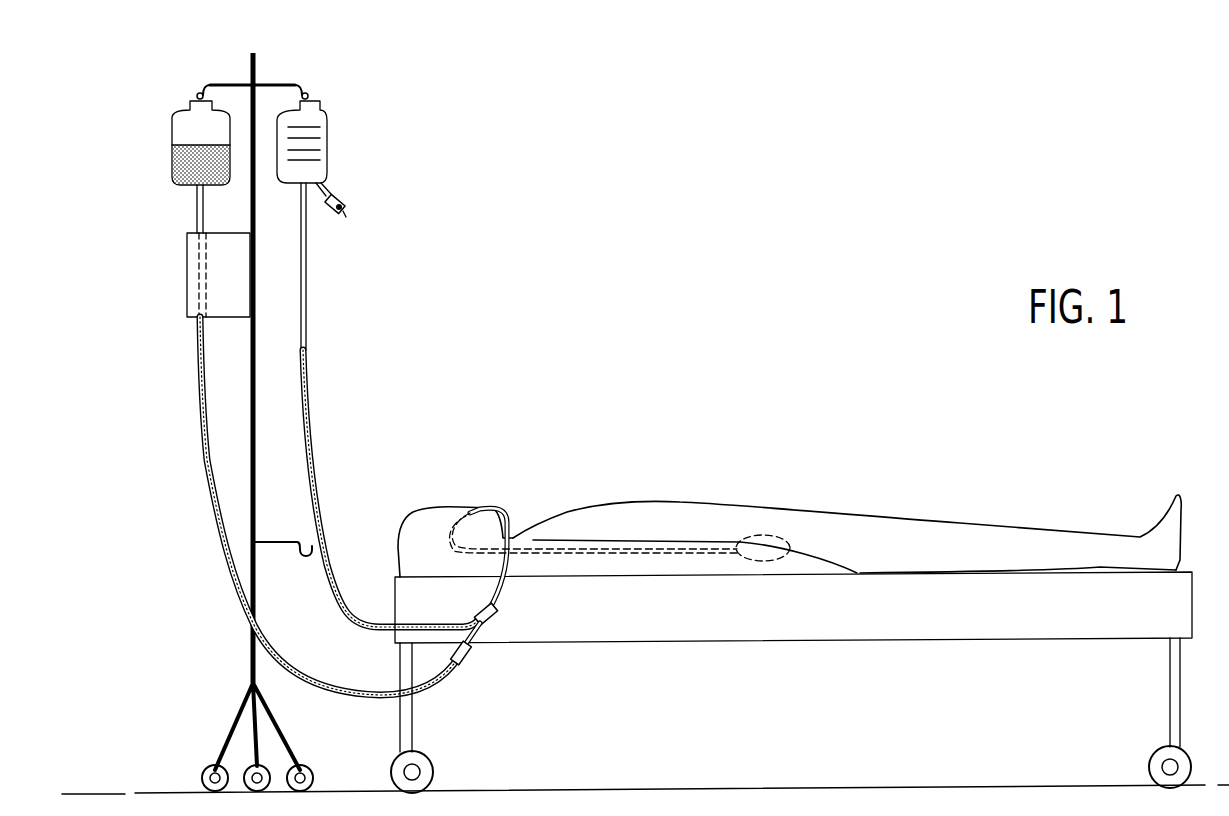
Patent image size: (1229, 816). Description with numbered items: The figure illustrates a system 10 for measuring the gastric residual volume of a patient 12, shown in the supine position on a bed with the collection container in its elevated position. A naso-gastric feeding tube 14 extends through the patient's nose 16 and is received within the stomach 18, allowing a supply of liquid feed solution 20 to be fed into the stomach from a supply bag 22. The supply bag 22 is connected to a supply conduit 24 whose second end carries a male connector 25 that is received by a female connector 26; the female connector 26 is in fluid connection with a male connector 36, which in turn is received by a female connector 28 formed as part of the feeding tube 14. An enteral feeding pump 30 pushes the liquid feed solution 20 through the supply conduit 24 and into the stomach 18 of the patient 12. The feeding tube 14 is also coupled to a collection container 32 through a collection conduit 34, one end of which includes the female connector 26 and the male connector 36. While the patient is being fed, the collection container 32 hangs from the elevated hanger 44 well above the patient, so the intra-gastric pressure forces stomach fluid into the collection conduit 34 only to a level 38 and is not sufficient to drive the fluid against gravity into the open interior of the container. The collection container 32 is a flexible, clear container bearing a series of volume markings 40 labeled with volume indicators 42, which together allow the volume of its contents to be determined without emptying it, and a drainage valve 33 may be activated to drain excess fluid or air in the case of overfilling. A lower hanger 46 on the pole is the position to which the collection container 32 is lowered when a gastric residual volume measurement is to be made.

The system 10 is at (406, 368).
The patient 12 is at (677, 502).
The naso-gastric feeding tube 14 is at (495, 505).
The nose 16 is at (458, 507).
The stomach 18 is at (767, 533).
The liquid feed solution 20 is at (190, 145).
The supply bag 22 is at (173, 112).
The supply conduit 24 is at (202, 363).
The male connector 25 is at (474, 657).
The female connector 26 is at (473, 649).
The female connector 28 is at (497, 616).
The enteral feeding pump 30 is at (187, 279).
The collection container 32 is at (319, 109).
The drainage valve 33 is at (345, 217).
The collection conduit 34 is at (310, 430).
The male connector 36 is at (480, 612).
The level 38 is at (308, 353).
The volume markings 40 is at (302, 126).
The volume indicators 42 is at (374, 135).
The elevated hanger 44 is at (267, 84).
The lower hanger 46 is at (278, 541).